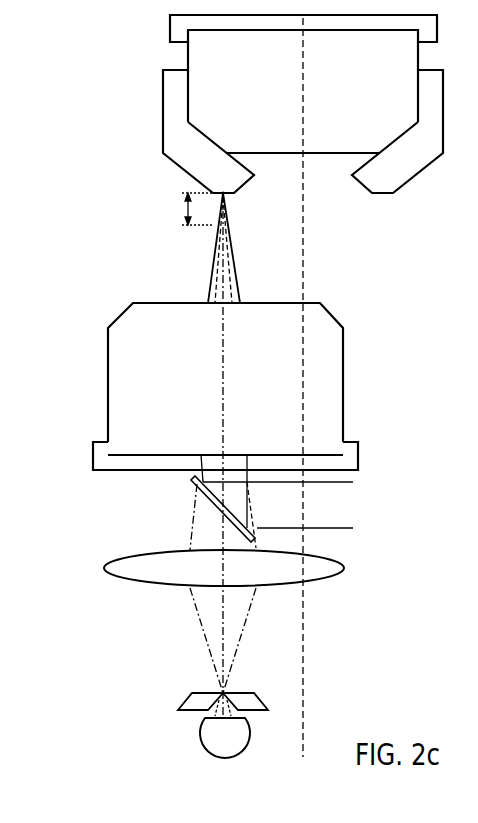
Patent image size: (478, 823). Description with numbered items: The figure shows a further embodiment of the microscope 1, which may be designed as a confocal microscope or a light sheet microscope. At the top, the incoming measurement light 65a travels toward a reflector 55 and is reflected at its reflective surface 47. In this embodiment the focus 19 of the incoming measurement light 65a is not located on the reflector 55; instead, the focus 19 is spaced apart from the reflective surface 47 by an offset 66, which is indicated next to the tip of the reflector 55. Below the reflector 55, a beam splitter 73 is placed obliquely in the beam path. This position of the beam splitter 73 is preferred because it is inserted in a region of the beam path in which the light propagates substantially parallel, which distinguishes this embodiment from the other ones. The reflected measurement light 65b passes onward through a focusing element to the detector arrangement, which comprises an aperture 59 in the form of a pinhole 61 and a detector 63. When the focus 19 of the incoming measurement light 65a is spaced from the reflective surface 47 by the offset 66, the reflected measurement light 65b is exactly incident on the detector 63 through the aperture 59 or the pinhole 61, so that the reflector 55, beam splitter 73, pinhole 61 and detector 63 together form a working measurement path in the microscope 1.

The microscope 1 is at (435, 213).
The focus 19 is at (228, 223).
The reflective surface 47 is at (222, 194).
The reflector 55 is at (178, 165).
The aperture 59 is at (260, 693).
The pinhole 61 is at (218, 690).
The detector 63 is at (212, 738).
The incoming measurement light 65a is at (241, 282).
The reflected measurement light 65b is at (228, 262).
The offset 66 is at (186, 212).
The beam splitter 73 is at (193, 481).